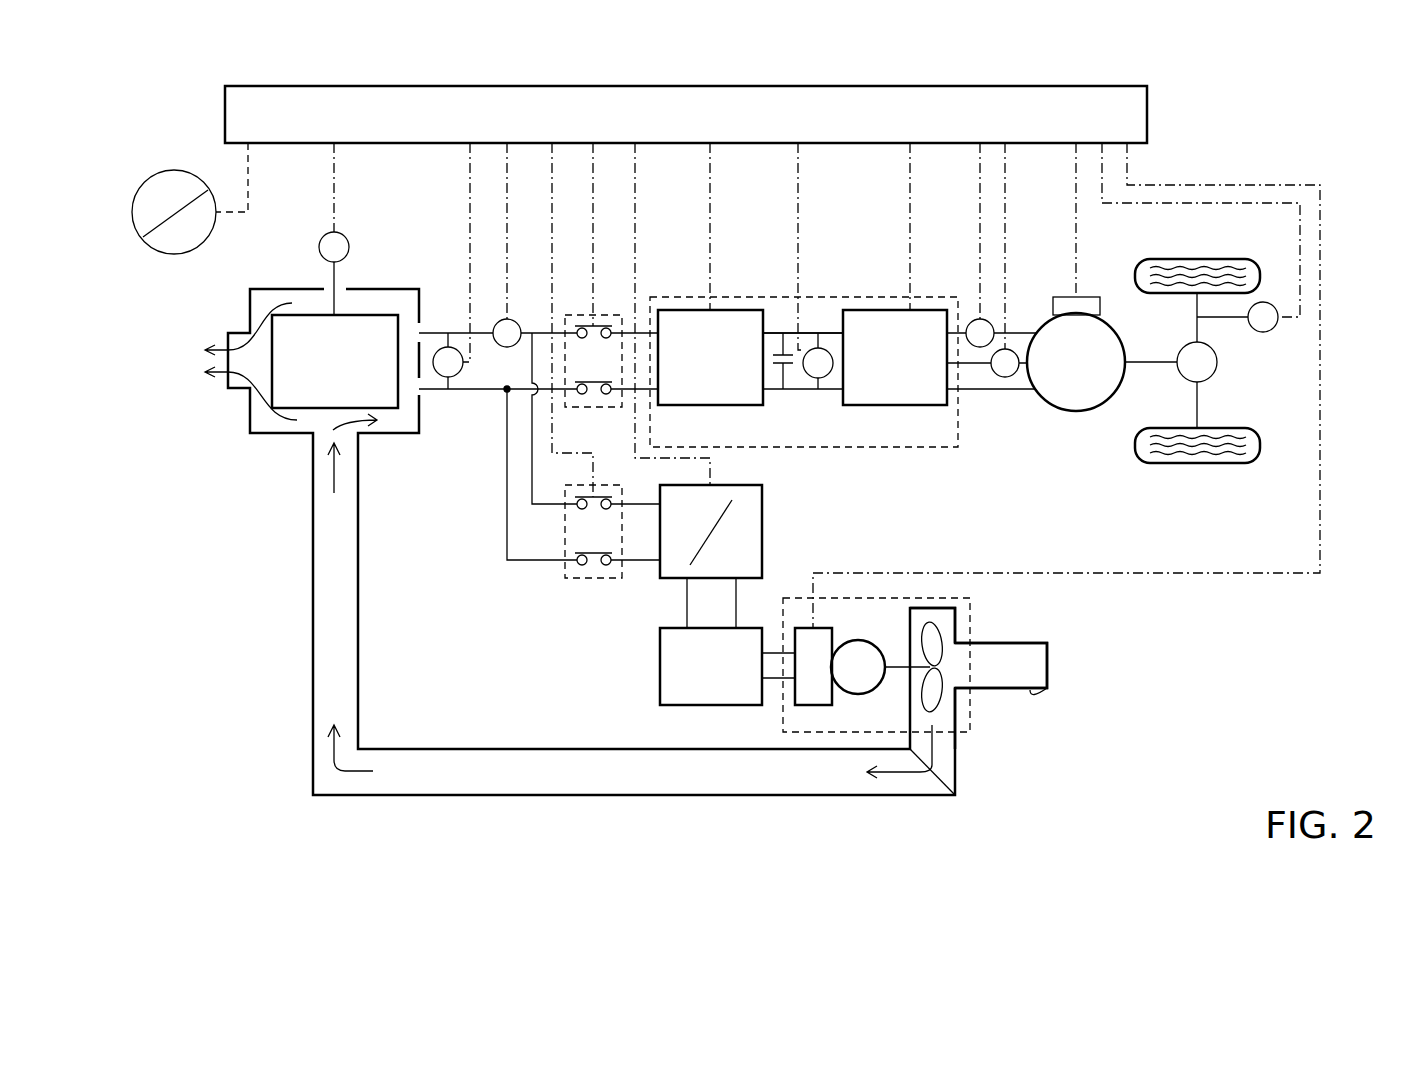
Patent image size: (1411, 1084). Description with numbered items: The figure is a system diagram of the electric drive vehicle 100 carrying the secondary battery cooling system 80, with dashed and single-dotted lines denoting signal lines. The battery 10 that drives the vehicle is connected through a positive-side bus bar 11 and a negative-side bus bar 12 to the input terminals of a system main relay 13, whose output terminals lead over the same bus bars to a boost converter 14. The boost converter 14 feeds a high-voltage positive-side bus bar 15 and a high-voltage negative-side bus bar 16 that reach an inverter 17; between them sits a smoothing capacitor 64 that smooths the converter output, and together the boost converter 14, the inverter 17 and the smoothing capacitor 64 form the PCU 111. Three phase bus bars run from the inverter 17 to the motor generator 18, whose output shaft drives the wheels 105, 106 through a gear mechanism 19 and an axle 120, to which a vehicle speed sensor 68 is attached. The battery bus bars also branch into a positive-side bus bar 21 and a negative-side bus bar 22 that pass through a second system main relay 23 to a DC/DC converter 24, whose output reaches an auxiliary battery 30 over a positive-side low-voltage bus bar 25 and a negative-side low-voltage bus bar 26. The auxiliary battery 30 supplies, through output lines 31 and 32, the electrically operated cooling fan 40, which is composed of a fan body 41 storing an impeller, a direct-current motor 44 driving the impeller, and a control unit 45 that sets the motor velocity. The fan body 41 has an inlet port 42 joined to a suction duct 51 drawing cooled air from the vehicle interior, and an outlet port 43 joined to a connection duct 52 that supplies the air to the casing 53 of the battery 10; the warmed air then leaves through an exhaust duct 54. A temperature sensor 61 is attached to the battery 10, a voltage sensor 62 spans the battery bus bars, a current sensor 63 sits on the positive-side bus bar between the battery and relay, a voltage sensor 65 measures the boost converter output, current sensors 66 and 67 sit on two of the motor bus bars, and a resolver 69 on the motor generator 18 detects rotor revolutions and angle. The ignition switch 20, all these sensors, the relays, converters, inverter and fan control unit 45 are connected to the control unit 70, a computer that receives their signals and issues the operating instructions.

The battery 10 is at (300, 410).
The positive-side bus bar 11 is at (433, 333).
The negative-side bus bar 12 is at (433, 395).
The system main relay 13 is at (600, 315).
The boost converter 14 is at (735, 310).
The high-voltage positive-side bus bar 15 is at (828, 333).
The high-voltage negative-side bus bar 16 is at (800, 390).
The inverter 17 is at (870, 310).
The motor generator 18 is at (1037, 318).
The gear mechanism 19 is at (1217, 372).
The ignition switch 20 is at (176, 172).
The positive-side bus bar 21 is at (520, 460).
The negative-side bus bar 22 is at (500, 520).
The system main relay 23 is at (588, 590).
The DC/DC converter 24 is at (762, 515).
The positive-side low-voltage bus bar 25 is at (740, 605).
The negative-side low-voltage bus bar 26 is at (687, 605).
The auxiliary battery 30 is at (660, 665).
The output line 31 is at (770, 650).
The output line 32 is at (778, 685).
The electrically operated cooling fan 40 is at (970, 710).
The fan body 41 is at (957, 625).
The inlet port 42 is at (1047, 665).
The outlet port 43 is at (955, 755).
The direct-current motor 44 is at (857, 640).
The control unit 45 is at (815, 705).
The suction duct 51 is at (1032, 690).
The connection duct 52 is at (955, 775).
The casing 53 is at (250, 405).
The exhaust duct 54 is at (228, 335).
The temperature sensor 61 is at (347, 238).
The voltage sensor 62 is at (463, 370).
The current sensor 63 is at (517, 322).
The smoothing capacitor 64 is at (780, 400).
The voltage sensor 65 is at (828, 380).
The current sensor 66 is at (972, 320).
The current sensor 67 is at (1005, 378).
The vehicle speed sensor 68 is at (1270, 332).
The resolver 69 is at (1090, 297).
The control unit 70 is at (1147, 110).
The secondary battery cooling system 80 is at (272, 622).
The electric drive vehicle 100 is at (1348, 323).
The wheel 105 is at (1205, 258).
The wheel 106 is at (1208, 465).
The PCU 111 is at (920, 450).
The axle 120 is at (1197, 405).